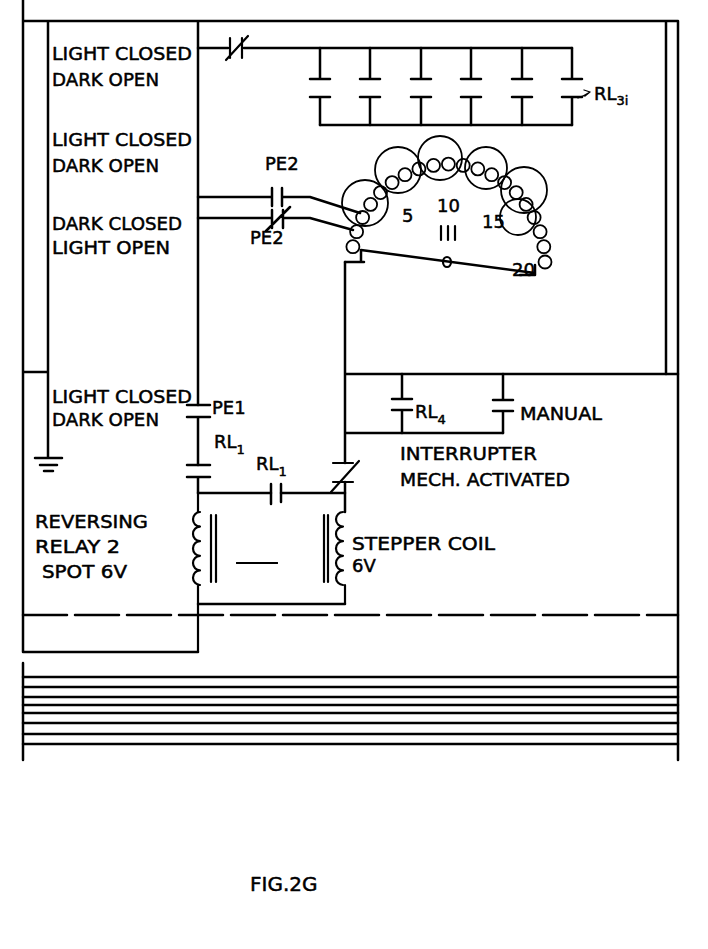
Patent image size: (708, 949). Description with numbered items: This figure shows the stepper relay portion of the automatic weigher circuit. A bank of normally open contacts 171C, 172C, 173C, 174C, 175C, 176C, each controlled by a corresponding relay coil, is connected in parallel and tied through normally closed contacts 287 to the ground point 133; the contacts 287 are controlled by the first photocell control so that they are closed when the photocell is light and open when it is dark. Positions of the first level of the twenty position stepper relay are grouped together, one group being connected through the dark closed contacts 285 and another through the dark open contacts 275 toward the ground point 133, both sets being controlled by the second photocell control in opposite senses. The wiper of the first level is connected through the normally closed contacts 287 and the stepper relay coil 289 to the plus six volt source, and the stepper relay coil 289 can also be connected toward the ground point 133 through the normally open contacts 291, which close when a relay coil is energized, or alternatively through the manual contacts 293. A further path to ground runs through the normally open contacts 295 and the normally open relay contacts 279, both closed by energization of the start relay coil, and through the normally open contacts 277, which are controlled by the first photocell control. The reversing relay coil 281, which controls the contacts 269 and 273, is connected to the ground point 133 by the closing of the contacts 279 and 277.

The normally closed contacts 287 is at (234, 62).
The normally open contacts 171C is at (314, 92).
The normally open contacts 172C is at (355, 96).
The normally open contacts 173C is at (410, 96).
The normally open contacts 174C is at (458, 94).
The normally open contacts 175C is at (518, 94).
The normally open contacts 176C is at (584, 100).
The dark open contacts 275 is at (274, 184).
The dark closed contacts 285 is at (276, 232).
The normally open contacts 291 is at (394, 400).
The manual switch 293 is at (496, 403).
The normally open contacts 277 is at (182, 404).
The normally open relay contacts 279 is at (194, 476).
The normally open contacts 295 is at (283, 484).
The ground point 133 is at (74, 452).
The reversing relay coil 281 is at (206, 514).
The stepper relay coil 289 is at (345, 526).
The contacts 269 is at (257, 551).
The contacts 273 is at (257, 577).